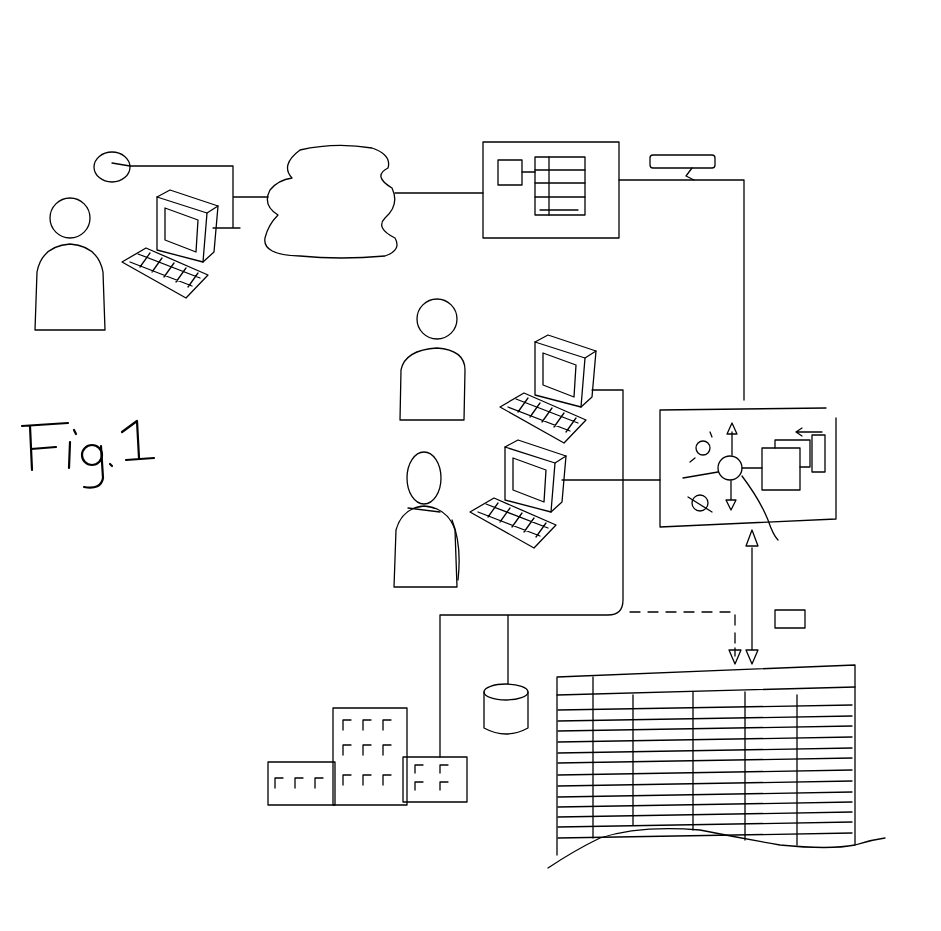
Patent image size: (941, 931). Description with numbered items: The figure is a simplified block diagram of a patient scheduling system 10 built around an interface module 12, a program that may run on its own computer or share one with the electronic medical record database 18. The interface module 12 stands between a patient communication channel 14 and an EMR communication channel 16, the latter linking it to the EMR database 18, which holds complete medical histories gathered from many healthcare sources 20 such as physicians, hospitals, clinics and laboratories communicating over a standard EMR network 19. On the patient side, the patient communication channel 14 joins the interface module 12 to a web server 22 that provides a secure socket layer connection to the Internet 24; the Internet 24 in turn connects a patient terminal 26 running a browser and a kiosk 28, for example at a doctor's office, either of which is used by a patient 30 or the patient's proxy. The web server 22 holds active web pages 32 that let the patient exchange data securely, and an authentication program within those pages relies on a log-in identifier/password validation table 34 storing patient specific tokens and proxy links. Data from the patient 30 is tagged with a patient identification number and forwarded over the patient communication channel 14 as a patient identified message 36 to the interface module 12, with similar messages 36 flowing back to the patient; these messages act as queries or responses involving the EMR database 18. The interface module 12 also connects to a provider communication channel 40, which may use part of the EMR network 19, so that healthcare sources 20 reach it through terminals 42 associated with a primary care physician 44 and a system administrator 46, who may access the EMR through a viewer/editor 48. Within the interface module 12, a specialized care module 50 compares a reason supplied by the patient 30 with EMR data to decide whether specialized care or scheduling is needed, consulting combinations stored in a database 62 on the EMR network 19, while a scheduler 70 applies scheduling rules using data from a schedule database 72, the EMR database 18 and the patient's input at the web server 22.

The patient scheduling system 10 is at (490, 76).
The interface module 12 is at (791, 408).
The patient communication channel 14 is at (800, 234).
The EMR communication channel 16 is at (852, 534).
The electronic medical record database 18 is at (838, 665).
The standard EMR network 19 is at (668, 607).
The healthcare sources 20 is at (312, 668).
The web server 22 is at (573, 142).
The Internet 24 is at (342, 218).
The patient terminal 26 is at (214, 246).
The kiosk 28 is at (128, 160).
The patient 30 is at (80, 304).
The active web pages 32 is at (513, 160).
The log-in identifier/password validation table 34 is at (585, 158).
The patient identified message 36 is at (700, 155).
The provider communication channel 40 is at (640, 386).
The terminals 42 is at (566, 346).
The primary care physician 44 is at (432, 568).
The system administrator 46 is at (442, 397).
The viewer/editor 48 is at (705, 512).
The specialized care module 50 is at (700, 441).
The database 62 is at (510, 722).
The scheduler 70 is at (780, 516).
The schedule database 72 is at (808, 448).